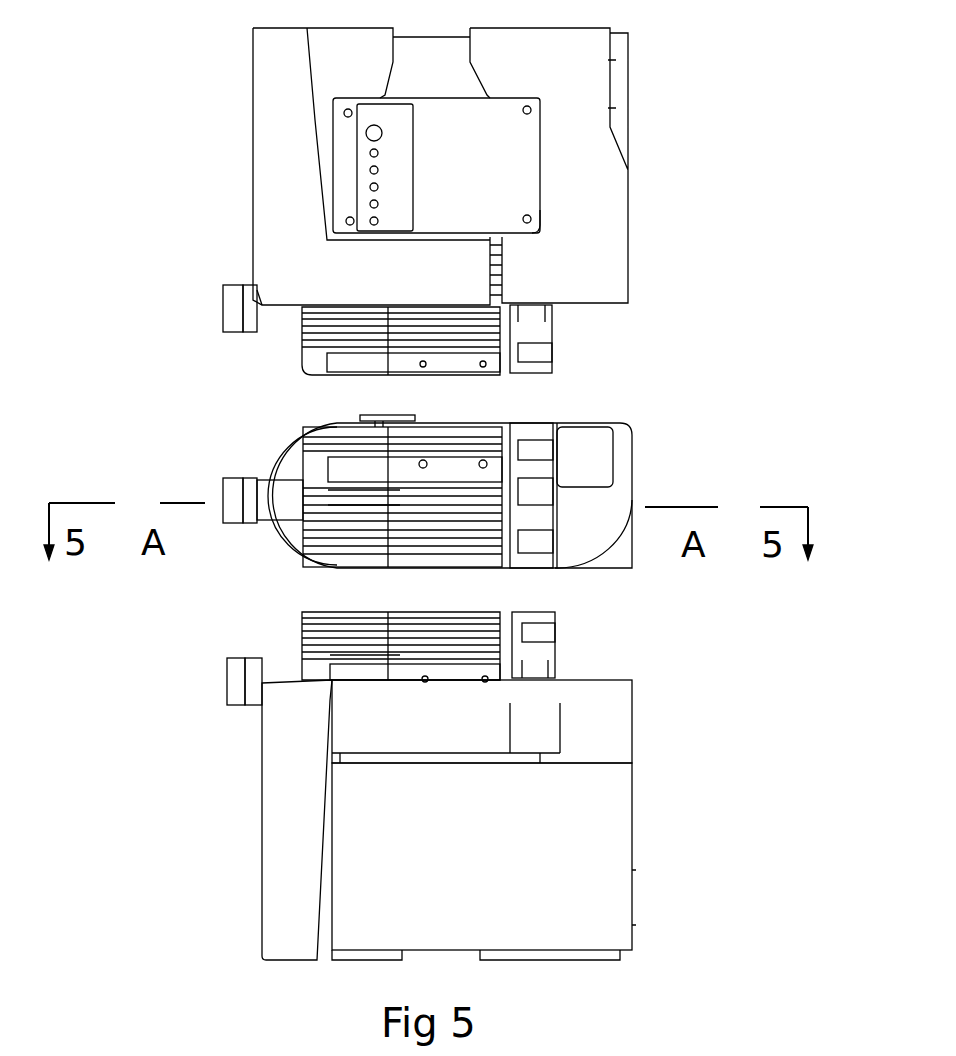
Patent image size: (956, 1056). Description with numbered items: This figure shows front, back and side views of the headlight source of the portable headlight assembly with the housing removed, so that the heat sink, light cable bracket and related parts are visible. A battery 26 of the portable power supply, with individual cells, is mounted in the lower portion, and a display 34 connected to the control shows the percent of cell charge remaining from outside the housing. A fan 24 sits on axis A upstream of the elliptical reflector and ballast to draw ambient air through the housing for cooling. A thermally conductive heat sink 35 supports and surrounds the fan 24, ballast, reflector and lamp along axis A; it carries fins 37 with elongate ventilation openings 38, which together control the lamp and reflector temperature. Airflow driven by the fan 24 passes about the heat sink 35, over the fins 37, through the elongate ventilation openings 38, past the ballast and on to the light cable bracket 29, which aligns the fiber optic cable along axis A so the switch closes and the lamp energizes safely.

The fan 24 is at (543, 337).
The battery 26 is at (487, 888).
The light cable bracket 29 is at (223, 302).
The display 34 is at (368, 141).
The heat sink 35 is at (460, 465).
The fins 37 is at (313, 430).
The elongate ventilation openings 38 is at (362, 498).